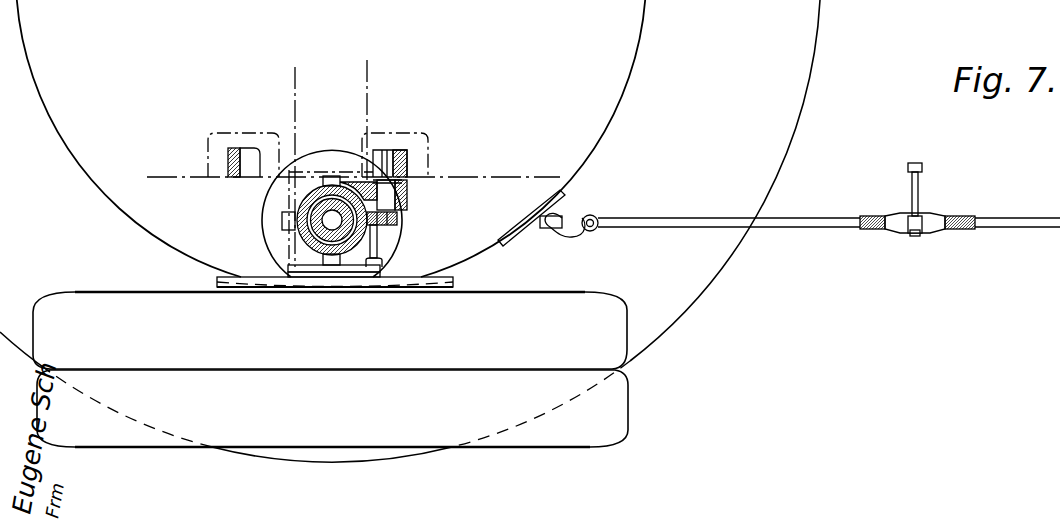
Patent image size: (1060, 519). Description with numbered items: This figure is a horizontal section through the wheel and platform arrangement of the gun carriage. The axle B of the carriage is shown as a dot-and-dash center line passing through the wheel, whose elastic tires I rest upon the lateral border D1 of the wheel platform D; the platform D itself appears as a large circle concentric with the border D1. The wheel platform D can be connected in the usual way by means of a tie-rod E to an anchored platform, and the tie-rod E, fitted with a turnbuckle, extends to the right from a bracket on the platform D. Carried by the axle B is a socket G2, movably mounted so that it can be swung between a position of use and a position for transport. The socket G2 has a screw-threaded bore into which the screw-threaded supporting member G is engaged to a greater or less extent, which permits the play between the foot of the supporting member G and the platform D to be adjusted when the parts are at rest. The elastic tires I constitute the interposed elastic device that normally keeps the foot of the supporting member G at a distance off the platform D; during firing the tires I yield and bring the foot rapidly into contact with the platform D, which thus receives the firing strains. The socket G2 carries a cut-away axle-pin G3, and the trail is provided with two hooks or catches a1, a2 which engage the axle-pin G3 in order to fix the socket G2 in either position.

The axle B is at (296, 82).
The hook or catch a1 is at (407, 166).
The hook or catch a2 is at (230, 163).
The supporting member G is at (296, 235).
The socket G2 is at (287, 211).
The cut-away axle-pin G3 is at (395, 160).
The wheel platform D is at (603, 113).
The lateral border of the platform D1 is at (708, 273).
The tie-rod E is at (838, 221).
The elastic tire I is at (626, 350).